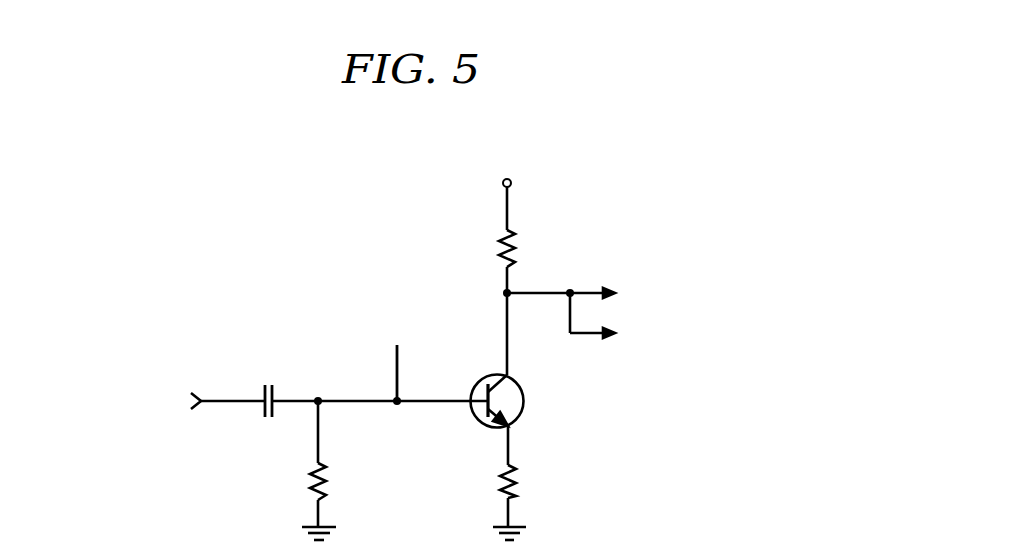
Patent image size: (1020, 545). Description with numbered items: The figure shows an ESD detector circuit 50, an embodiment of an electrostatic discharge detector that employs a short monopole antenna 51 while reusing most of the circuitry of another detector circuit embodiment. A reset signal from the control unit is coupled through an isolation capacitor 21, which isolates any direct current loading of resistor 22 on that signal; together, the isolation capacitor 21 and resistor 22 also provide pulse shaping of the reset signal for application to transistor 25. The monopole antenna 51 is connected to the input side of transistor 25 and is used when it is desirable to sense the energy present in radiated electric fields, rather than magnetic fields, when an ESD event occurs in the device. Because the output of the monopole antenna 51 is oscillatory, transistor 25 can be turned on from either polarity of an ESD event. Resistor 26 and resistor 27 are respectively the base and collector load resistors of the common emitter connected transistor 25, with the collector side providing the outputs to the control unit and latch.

The ESD detector circuit 50 is at (280, 253).
The isolation capacitor 21 is at (268, 383).
The resistor 22 is at (311, 485).
The monopole antenna 51 is at (395, 362).
The transistor 25 is at (524, 401).
The base load resistor 26 is at (518, 484).
The collector load resistor 27 is at (519, 245).